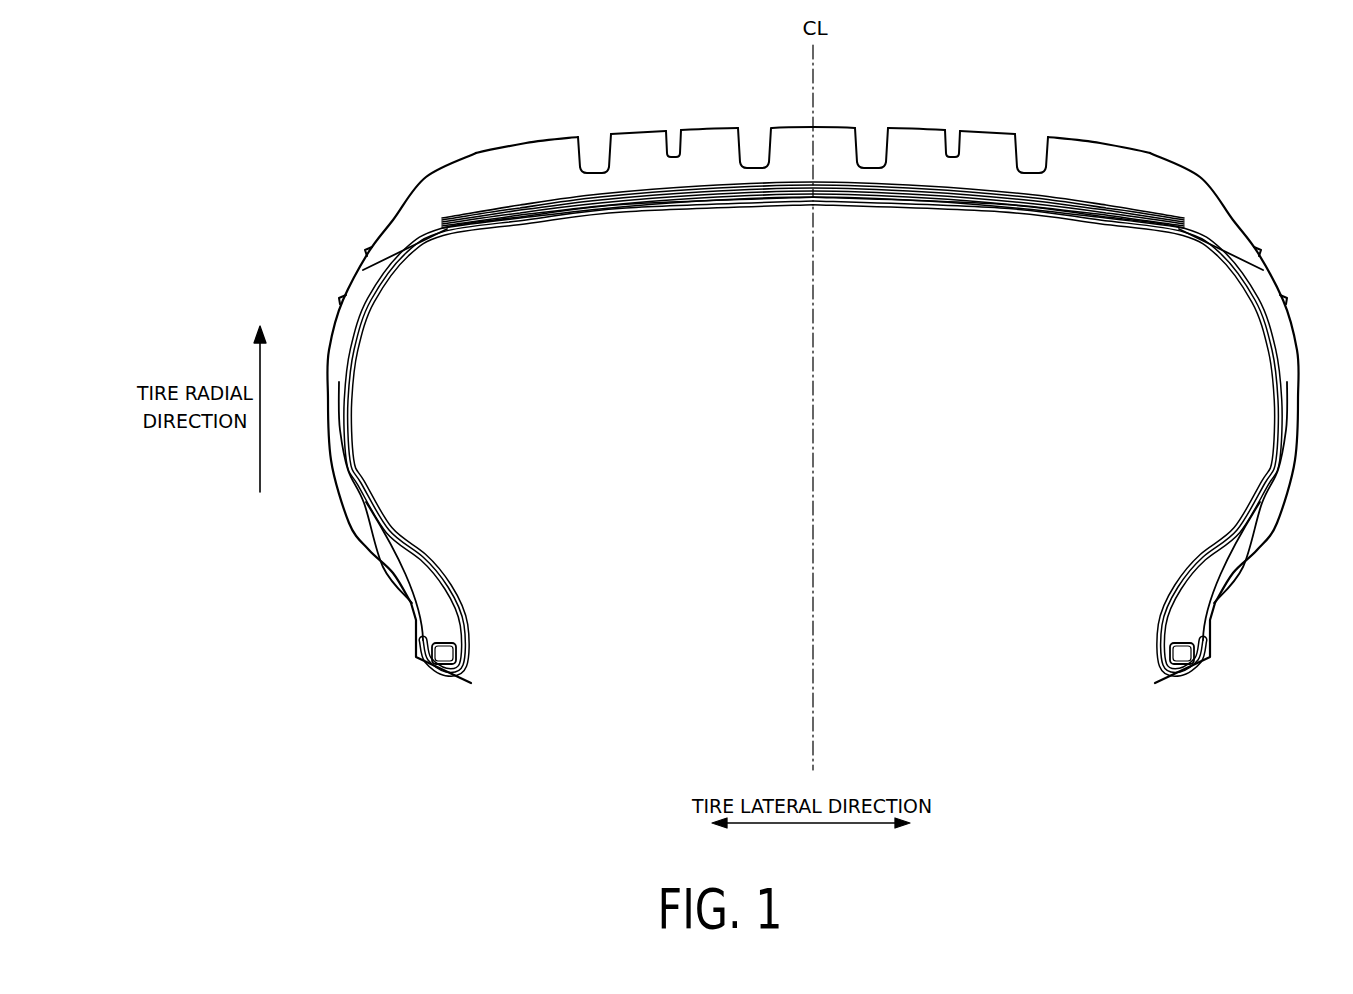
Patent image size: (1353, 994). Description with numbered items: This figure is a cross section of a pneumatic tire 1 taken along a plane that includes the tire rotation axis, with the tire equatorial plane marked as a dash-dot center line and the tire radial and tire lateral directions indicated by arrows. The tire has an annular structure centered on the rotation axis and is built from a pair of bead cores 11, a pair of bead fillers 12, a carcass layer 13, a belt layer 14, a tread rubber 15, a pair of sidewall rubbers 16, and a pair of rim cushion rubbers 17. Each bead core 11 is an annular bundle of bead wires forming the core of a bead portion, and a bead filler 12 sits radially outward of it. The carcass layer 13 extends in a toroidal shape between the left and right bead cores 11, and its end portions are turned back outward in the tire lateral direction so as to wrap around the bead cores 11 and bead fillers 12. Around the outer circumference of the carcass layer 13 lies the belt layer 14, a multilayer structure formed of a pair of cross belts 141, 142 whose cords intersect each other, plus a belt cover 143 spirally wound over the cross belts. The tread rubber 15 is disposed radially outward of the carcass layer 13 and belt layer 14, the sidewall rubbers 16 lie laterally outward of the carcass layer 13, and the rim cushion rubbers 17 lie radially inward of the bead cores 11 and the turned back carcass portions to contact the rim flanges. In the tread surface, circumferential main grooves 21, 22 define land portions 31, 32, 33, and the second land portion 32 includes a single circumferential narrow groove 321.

The pneumatic tire 1 is at (1106, 87).
The bead core 11 is at (440, 656).
The bead filler 12 is at (420, 592).
The carcass layer 13 is at (1192, 253).
The belt layer 14 is at (813, 262).
The cross belt 141 is at (997, 296).
The cross belt 142 is at (1082, 216).
The belt cover 143 is at (1027, 206).
The tread rubber 15 is at (1203, 217).
The sidewall rubber 16 is at (343, 330).
The rim cushion rubber 17 is at (392, 585).
The circumferential main groove 21 is at (590, 147).
The circumferential main groove 22 is at (753, 139).
The land portion 31 is at (522, 142).
The second land portion 32 is at (634, 122).
The circumferential narrow groove 321 is at (677, 139).
The land portion 33 is at (826, 126).